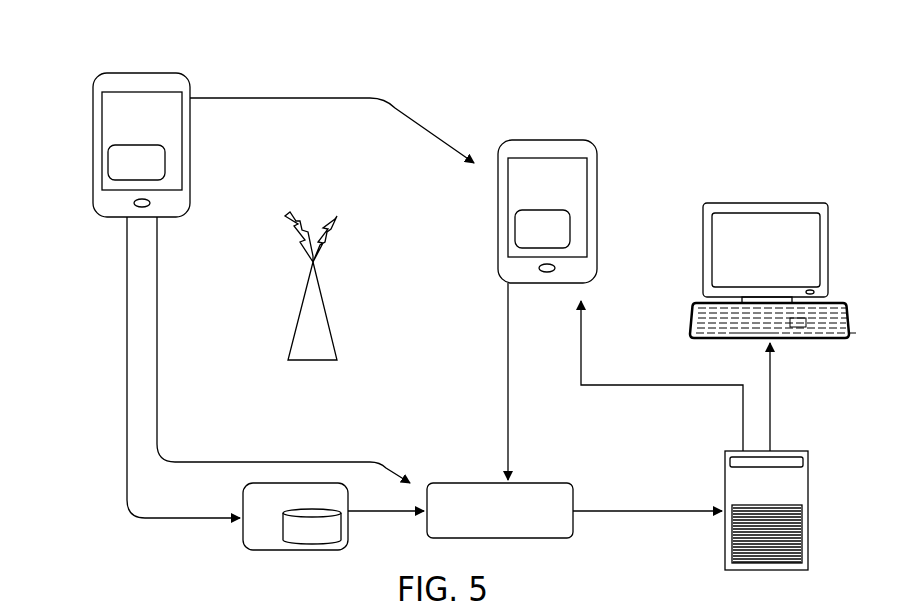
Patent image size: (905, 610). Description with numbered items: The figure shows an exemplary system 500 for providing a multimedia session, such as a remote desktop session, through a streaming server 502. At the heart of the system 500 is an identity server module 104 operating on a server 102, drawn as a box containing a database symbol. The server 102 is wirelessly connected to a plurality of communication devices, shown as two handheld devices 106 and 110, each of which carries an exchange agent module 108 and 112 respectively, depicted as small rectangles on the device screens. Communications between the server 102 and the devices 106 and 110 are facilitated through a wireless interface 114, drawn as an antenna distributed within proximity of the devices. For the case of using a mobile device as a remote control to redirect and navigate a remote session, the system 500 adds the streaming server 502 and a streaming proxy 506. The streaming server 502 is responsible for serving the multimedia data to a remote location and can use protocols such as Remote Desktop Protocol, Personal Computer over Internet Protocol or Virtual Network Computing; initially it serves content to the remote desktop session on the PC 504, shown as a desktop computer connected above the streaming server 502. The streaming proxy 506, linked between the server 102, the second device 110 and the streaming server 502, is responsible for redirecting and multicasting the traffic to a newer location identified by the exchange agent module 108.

The system 500 is at (748, 66).
The communication device 106 is at (107, 145).
The exchange agent module 108 is at (108, 162).
The communication device 110 is at (514, 211).
The exchange agent module 112 is at (515, 230).
The wireless interface 114 is at (325, 312).
The server 102 is at (290, 516).
The identity server module 104 is at (342, 530).
The streaming proxy 506 is at (542, 483).
The streaming server 502 is at (727, 540).
The PC 504 is at (703, 248).